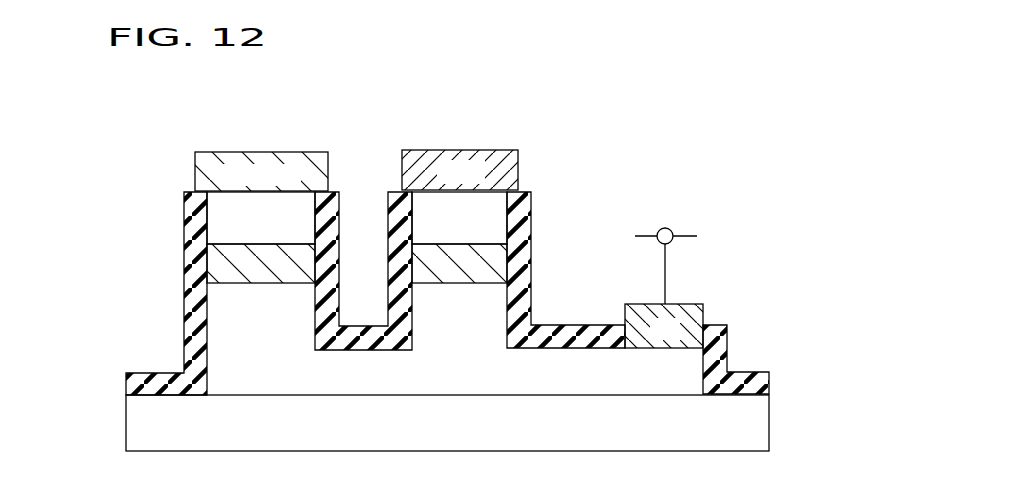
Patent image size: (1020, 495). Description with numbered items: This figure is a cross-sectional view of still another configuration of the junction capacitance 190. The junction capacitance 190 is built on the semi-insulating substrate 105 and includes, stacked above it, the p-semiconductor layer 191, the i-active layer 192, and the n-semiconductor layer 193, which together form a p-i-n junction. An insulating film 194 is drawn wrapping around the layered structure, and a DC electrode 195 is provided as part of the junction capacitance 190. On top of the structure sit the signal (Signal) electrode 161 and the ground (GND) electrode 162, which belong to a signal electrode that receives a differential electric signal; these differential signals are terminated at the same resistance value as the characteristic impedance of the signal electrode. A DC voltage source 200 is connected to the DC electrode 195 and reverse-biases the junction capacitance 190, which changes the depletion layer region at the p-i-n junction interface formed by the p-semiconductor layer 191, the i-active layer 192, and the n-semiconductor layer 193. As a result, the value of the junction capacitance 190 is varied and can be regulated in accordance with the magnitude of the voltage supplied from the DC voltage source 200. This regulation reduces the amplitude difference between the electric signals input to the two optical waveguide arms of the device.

The semi-insulating substrate 105 is at (126, 419).
The signal electrode 161 is at (262, 152).
The ground electrode 162 is at (460, 150).
The junction capacitance 190 is at (118, 208).
The p-semiconductor layer 191 is at (218, 210).
The i-active layer 192 is at (218, 262).
The n-semiconductor layer 193 is at (217, 313).
The insulating film 194 is at (126, 382).
The DC electrode 195 is at (689, 305).
The DC voltage source 200 is at (667, 228).